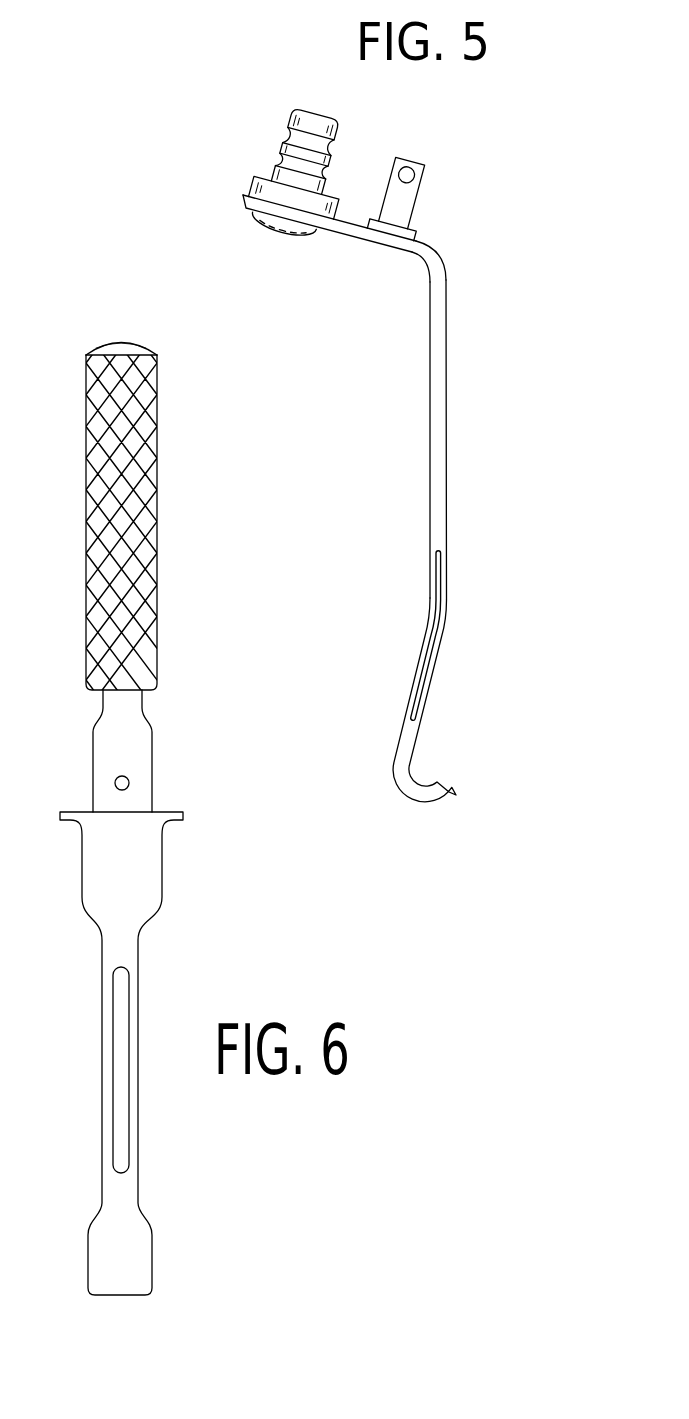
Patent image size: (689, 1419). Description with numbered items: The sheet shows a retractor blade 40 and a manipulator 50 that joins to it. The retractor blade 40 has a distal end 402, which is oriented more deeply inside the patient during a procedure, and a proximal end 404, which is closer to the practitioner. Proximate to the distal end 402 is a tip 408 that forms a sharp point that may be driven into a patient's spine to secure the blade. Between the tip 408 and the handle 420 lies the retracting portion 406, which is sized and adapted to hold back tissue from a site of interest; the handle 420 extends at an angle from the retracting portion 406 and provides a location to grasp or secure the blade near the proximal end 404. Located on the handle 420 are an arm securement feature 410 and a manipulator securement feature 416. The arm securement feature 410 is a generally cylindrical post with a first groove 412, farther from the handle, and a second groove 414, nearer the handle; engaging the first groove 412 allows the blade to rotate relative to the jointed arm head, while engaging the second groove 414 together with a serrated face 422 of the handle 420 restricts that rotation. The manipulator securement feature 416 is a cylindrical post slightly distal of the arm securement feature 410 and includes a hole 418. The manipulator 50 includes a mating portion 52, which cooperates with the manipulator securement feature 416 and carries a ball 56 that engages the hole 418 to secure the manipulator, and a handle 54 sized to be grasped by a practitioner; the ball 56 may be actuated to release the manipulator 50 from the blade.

In FIG. 5, the retractor blade 40 is at (486, 456).
In FIG. 6, the retractor blade 40 is at (82, 989).
In FIG. 6, the manipulator 50 is at (134, 718).
In FIG. 6, the mating portion 52 is at (134, 751).
In FIG. 6, the handle 54 is at (157, 583).
In FIG. 6, the ball 56 is at (117, 777).
In FIG. 5, the distal end 402 is at (376, 628).
In FIG. 5, the proximal end 404 is at (343, 292).
In FIG. 5, the retracting portion 406 is at (429, 463).
In FIG. 5, the tip 408 is at (458, 790).
In FIG. 5, the arm securement feature 410 is at (297, 150).
In FIG. 5, the first groove 412 is at (288, 126).
In FIG. 5, the second groove 414 is at (273, 156).
In FIG. 5, the manipulator securement feature 416 is at (456, 181).
In FIG. 5, the hole 418 is at (414, 173).
In FIG. 5, the handle 420 is at (246, 199).
In FIG. 5, the face 422 is at (352, 224).